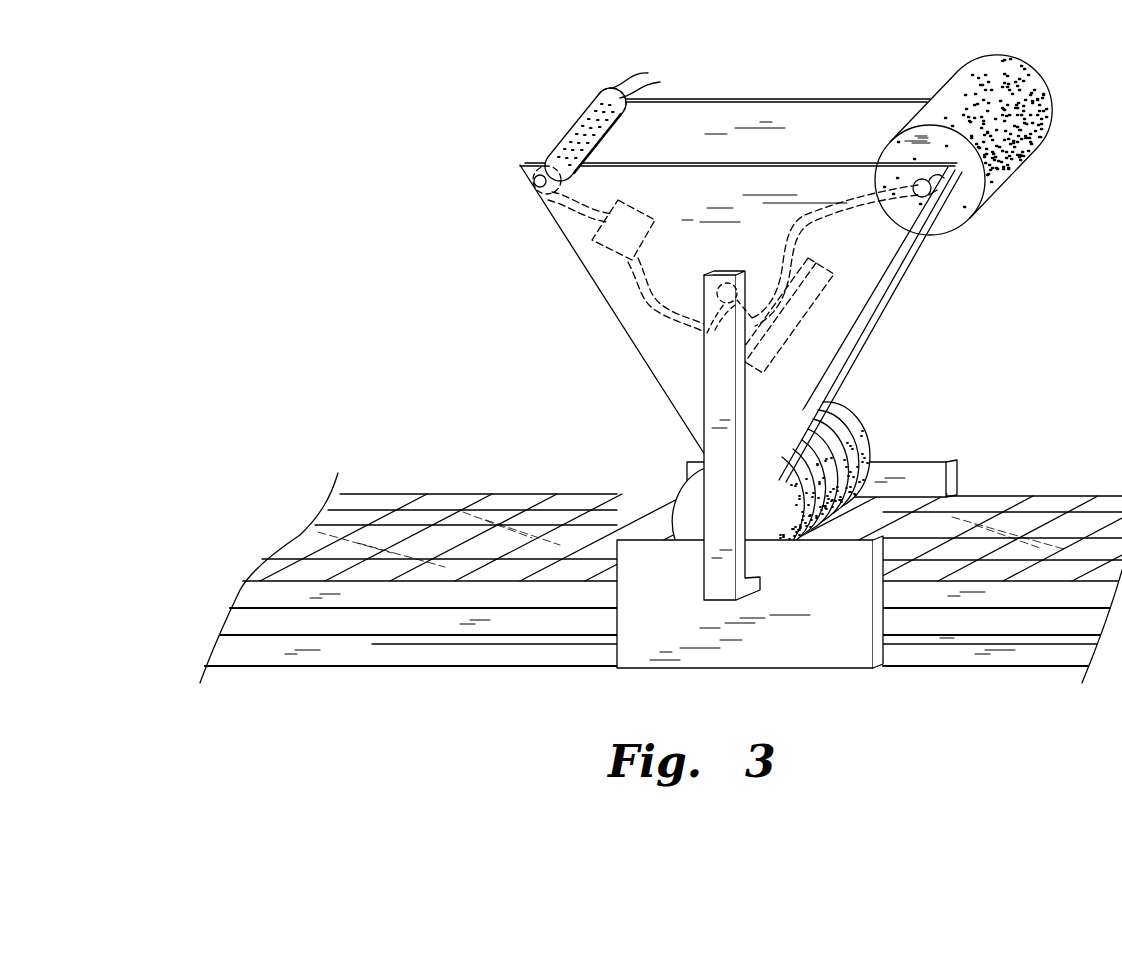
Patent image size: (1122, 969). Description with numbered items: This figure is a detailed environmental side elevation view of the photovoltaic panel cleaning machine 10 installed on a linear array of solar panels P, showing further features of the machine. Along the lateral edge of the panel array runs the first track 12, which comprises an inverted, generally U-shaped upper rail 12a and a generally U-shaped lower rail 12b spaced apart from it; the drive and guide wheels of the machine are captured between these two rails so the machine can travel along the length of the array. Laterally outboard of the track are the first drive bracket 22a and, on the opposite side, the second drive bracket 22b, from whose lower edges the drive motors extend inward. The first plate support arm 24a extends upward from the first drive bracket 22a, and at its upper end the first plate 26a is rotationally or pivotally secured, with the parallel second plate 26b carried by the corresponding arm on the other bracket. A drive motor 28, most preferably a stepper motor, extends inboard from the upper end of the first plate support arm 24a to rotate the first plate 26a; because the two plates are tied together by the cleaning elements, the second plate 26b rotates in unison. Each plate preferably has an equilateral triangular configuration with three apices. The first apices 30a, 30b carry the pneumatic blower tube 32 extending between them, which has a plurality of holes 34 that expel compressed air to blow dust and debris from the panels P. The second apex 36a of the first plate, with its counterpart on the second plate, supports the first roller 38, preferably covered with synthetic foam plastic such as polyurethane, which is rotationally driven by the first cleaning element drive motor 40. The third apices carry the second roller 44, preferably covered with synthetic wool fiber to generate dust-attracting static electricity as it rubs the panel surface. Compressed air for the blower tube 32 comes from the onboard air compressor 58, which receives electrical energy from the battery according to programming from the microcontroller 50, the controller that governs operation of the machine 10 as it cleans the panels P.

The panel cleaning machine 10 is at (295, 107).
The first track 12 is at (285, 670).
The upper rail 12a is at (372, 638).
The lower rail 12b is at (471, 670).
The photovoltaic panels P is at (450, 500).
The first drive bracket 22a is at (845, 594).
The second drive bracket 22b is at (925, 461).
The first plate support arm 24a is at (705, 382).
The first plate 26a is at (618, 318).
The second plate 26b is at (764, 99).
The drive motor 28 is at (700, 297).
The first apex of first plate 30a is at (520, 165).
The first apex of second plate 30b is at (595, 97).
The pneumatic blower tube 32 is at (565, 130).
The holes 34 is at (645, 74).
The second apex of first plate 36a is at (977, 217).
The first roller 38 is at (1043, 80).
The first cleaning element drive motor 40 is at (953, 235).
The second roller 44 is at (855, 410).
The microcontroller 50 is at (815, 297).
The air compressor 58 is at (600, 243).